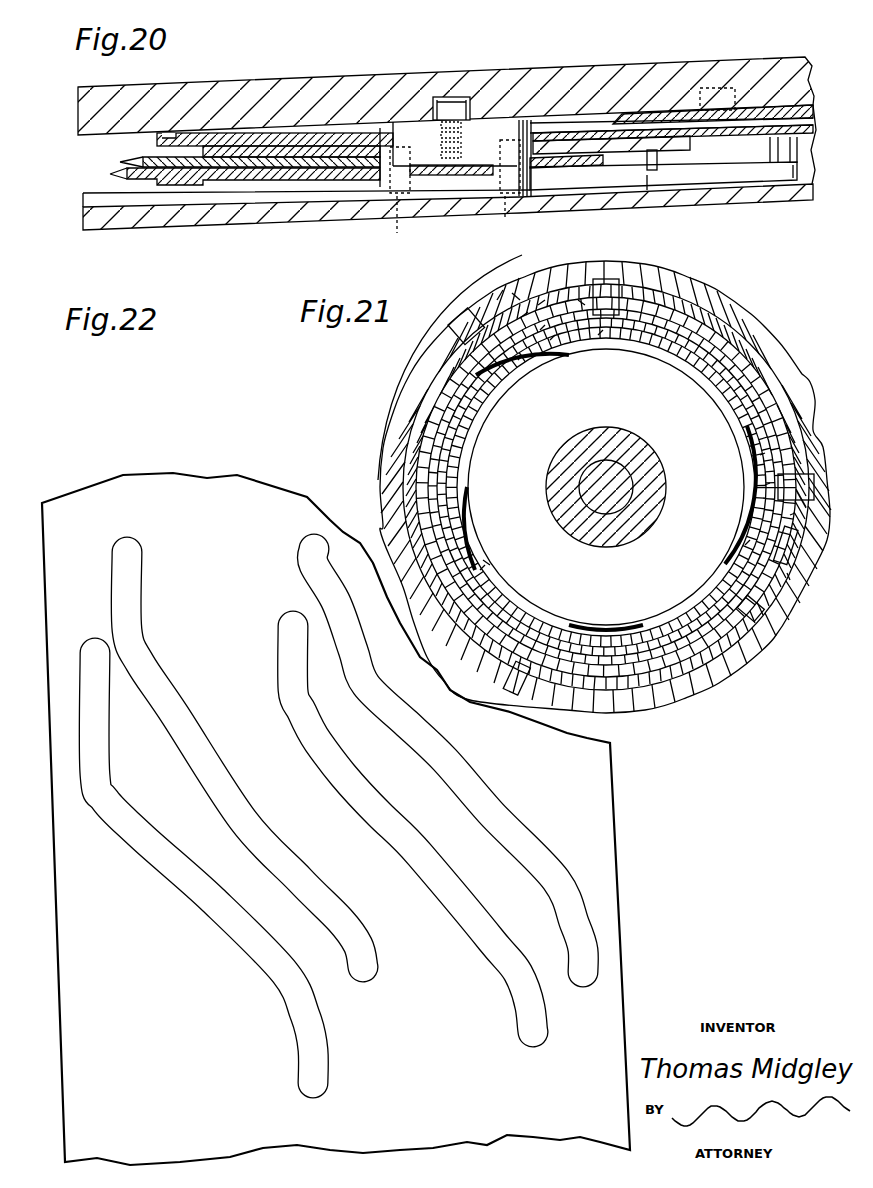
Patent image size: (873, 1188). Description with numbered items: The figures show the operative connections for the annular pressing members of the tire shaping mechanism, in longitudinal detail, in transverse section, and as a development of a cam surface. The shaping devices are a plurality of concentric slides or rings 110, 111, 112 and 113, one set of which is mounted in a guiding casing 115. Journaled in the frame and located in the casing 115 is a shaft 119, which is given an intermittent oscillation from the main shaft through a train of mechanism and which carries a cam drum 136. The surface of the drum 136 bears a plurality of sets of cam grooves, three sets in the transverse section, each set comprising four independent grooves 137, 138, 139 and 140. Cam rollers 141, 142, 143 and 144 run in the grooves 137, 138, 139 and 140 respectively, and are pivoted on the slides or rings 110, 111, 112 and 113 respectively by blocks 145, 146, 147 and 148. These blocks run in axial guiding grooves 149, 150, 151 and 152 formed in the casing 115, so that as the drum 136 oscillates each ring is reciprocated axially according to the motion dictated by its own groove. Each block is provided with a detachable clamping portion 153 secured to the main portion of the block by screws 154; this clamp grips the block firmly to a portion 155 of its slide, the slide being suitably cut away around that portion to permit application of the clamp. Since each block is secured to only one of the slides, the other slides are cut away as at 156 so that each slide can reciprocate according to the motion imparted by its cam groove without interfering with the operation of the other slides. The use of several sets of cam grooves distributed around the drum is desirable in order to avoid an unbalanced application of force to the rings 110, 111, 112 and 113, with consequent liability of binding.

In FIG. 20, the slide or ring 110 is at (195, 135).
In FIG. 21, the slide or ring 110 is at (457, 430).
In FIG. 20, the slide or ring 111 is at (217, 148).
In FIG. 21, the slide or ring 111 is at (445, 452).
In FIG. 20, the slide or ring 112 is at (125, 162).
In FIG. 21, the slide or ring 112 is at (445, 470).
In FIG. 20, the slide or ring 113 is at (115, 181).
In FIG. 21, the slide or ring 113 is at (455, 505).
In FIG. 20, the guiding casing 115 is at (182, 222).
In FIG. 21, the guiding casing 115 is at (405, 388).
In FIG. 21, the shaft 119 is at (625, 475).
In FIG. 20, the cam drum 136 is at (530, 62).
In FIG. 21, the cam drum 136 is at (690, 365).
In FIG. 22, the cam drum 136 is at (590, 828).
In FIG. 20, the cam groove 137 is at (447, 97).
In FIG. 21, the cam groove 137 is at (578, 340).
In FIG. 22, the cam groove 137 is at (448, 755).
In FIG. 20, the cam groove 138 is at (712, 85).
In FIG. 22, the cam groove 138 is at (398, 822).
In FIG. 22, the cam groove 139 is at (345, 888).
In FIG. 22, the cam groove 140 is at (258, 942).
In FIG. 20, the cam roller 141 is at (440, 125).
In FIG. 21, the cam roller 141 is at (598, 335).
In FIG. 21, the cam roller 142 is at (550, 340).
In FIG. 21, the cam roller 143 is at (540, 330).
In FIG. 21, the cam roller 144 is at (518, 360).
In FIG. 20, the block 145 is at (451, 161).
In FIG. 21, the block 145 is at (578, 300).
In FIG. 20, the block 146 is at (663, 153).
In FIG. 21, the block 146 is at (538, 305).
In FIG. 21, the block 147 is at (512, 293).
In FIG. 21, the block 148 is at (483, 323).
In FIG. 20, the axial guiding groove 149 is at (268, 200).
In FIG. 21, the axial guiding groove 149 is at (612, 283).
In FIG. 21, the axial guiding groove 150 is at (520, 318).
In FIG. 21, the axial guiding groove 151 is at (503, 300).
In FIG. 21, the axial guiding groove 152 is at (468, 330).
In FIG. 20, the detachable clamping portion 153 is at (428, 173).
In FIG. 20, the screws 154 is at (508, 195).
In FIG. 20, the portion of the slide 155 is at (473, 152).
In FIG. 20, the cut-away 156 is at (380, 157).